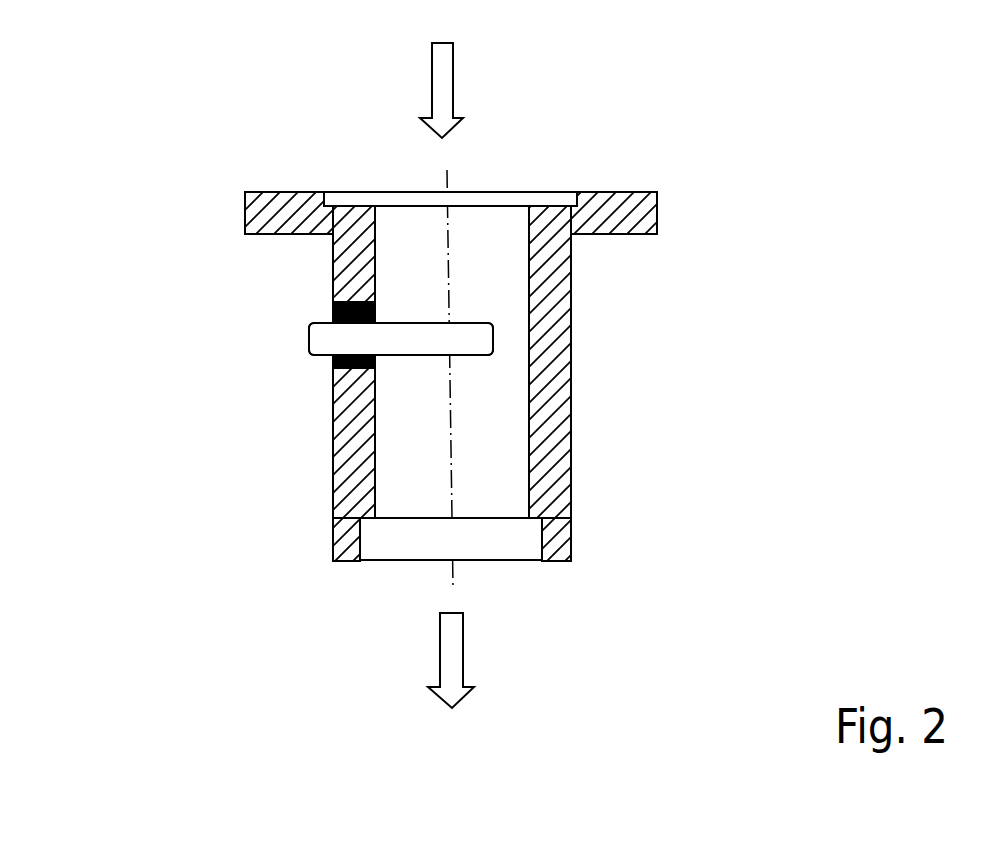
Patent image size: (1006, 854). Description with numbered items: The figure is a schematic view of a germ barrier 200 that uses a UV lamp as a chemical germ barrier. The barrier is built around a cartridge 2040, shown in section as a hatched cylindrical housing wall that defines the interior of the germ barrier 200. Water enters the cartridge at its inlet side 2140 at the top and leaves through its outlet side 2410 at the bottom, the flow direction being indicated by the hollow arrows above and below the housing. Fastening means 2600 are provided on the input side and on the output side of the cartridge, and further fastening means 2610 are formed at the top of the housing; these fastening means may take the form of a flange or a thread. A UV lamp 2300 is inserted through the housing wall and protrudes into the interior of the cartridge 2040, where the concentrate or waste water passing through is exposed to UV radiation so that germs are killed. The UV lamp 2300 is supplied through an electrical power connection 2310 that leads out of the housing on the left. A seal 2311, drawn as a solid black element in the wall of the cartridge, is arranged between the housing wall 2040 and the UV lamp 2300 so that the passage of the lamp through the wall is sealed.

The chemical germ barrier 200 is at (253, 95).
The cartridge 2040 is at (571, 333).
The inlet side of cartridge 2140 is at (507, 190).
The fastening means 2610 is at (657, 219).
The fastening means 2600 is at (562, 537).
The outlet side of cartridge 2410 is at (498, 562).
The seal 2311 is at (333, 309).
The UV lamp 2300 is at (398, 358).
The electrical power connection 2310 is at (310, 347).